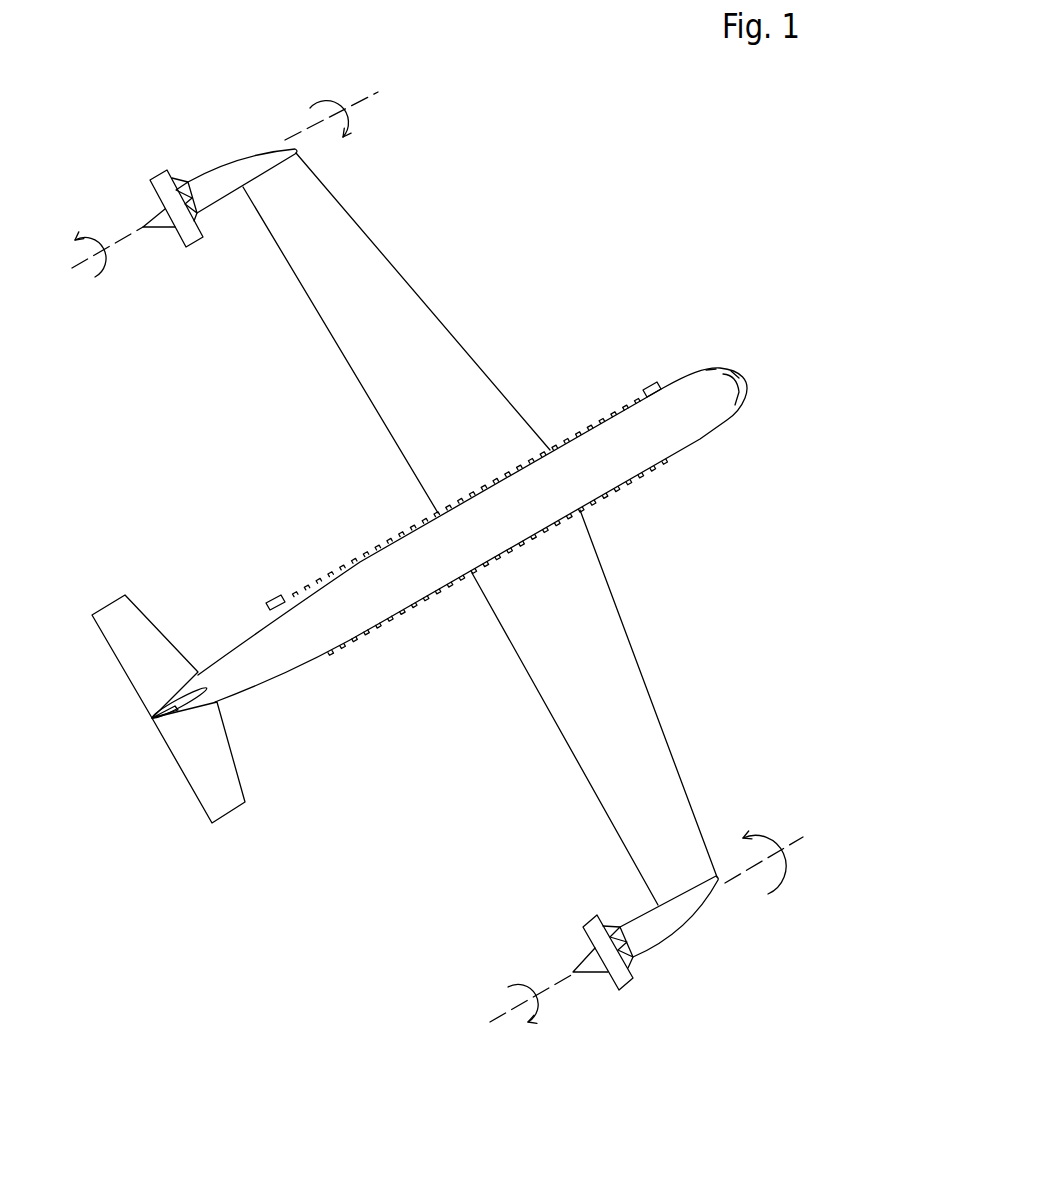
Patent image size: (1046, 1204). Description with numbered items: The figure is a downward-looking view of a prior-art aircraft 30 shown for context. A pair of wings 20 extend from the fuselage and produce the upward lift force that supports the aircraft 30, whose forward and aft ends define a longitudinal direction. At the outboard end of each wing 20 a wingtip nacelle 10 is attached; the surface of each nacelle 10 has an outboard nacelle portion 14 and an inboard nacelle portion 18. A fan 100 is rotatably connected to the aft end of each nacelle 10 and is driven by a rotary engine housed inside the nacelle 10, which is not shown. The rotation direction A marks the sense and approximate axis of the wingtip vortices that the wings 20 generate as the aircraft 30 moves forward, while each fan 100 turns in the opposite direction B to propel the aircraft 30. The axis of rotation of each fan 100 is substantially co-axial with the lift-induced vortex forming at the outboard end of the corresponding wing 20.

The wingtip nacelle 10 is at (429, 554).
The outboard nacelle portion 14 is at (207, 187).
The inboard nacelle portion 18 is at (242, 188).
The wing 20 is at (387, 258).
The aircraft 30 is at (600, 325).
The fan 100 is at (175, 248).